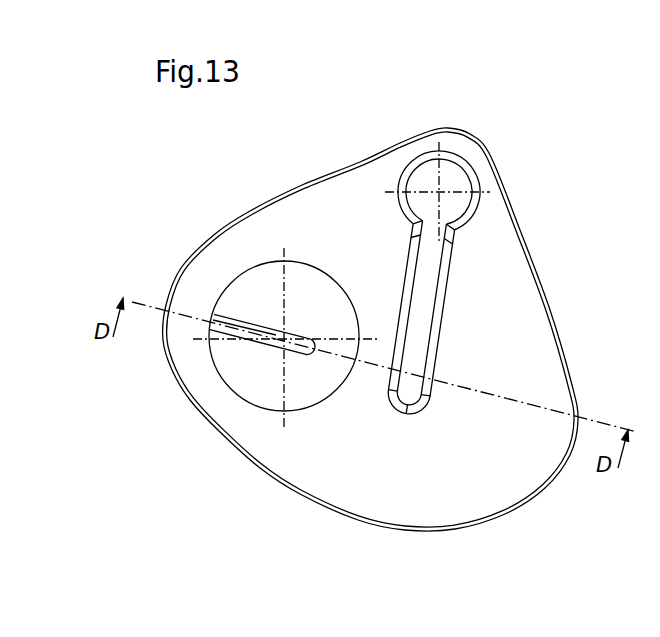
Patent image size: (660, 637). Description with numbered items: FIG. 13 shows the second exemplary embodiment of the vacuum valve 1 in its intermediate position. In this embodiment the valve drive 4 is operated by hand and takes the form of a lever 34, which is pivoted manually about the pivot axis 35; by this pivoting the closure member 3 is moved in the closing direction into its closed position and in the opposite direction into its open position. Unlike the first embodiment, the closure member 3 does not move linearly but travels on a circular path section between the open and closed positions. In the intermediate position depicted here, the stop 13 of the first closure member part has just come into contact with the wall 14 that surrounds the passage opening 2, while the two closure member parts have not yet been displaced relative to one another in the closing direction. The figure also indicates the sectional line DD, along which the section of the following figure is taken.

The vacuum valve 1 is at (545, 250).
The passage opening 2 is at (253, 306).
The closure member 3 is at (273, 304).
The valve drive 4 is at (492, 220).
The stop 13 is at (253, 331).
The wall 14 is at (222, 340).
The lever 34 is at (417, 302).
The pivot axis 35 is at (440, 191).